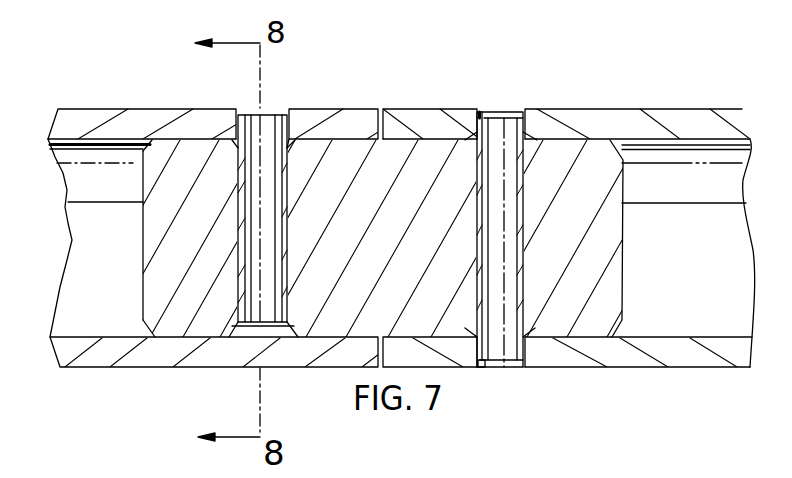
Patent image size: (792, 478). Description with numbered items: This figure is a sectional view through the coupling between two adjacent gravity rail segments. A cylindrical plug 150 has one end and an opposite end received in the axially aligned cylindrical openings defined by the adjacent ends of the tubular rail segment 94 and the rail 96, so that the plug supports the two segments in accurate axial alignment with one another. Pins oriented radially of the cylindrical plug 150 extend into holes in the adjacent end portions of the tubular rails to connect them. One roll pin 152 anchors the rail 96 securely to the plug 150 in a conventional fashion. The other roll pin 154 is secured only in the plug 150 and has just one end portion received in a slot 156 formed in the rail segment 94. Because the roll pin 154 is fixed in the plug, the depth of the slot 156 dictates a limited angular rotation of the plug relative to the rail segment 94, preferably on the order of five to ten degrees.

The rail segment 94 is at (167, 109).
The rail 96 is at (606, 368).
The cylindrical plug 150 is at (615, 272).
The pin 152 is at (526, 136).
The roll pin 154 is at (288, 157).
The slot 156 is at (244, 110).